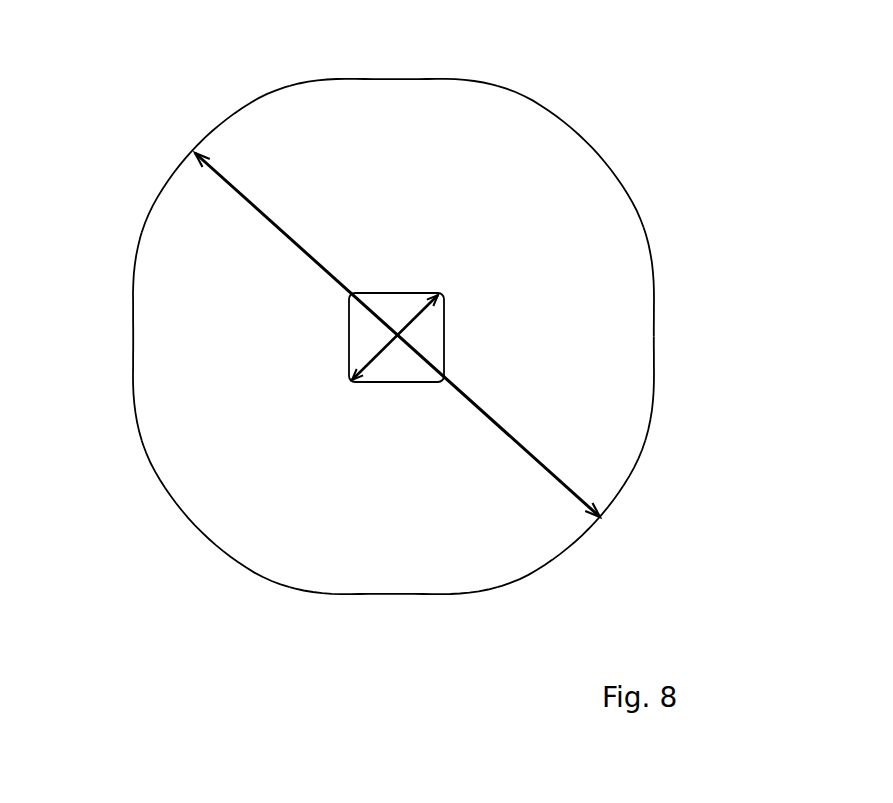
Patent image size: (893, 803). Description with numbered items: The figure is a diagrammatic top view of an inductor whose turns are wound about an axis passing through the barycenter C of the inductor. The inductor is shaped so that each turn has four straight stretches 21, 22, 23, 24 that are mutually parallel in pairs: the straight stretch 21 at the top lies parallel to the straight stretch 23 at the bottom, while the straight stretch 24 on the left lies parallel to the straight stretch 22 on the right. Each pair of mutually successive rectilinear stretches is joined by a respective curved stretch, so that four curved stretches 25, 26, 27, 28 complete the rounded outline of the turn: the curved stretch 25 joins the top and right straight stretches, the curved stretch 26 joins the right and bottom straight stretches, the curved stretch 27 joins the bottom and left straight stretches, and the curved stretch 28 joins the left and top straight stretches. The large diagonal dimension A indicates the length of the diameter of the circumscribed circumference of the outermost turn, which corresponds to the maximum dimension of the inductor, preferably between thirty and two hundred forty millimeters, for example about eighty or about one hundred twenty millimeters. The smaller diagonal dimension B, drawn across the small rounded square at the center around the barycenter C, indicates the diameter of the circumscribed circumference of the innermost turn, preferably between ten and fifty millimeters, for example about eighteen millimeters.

The straight stretch 21 is at (396, 79).
The straight stretch 22 is at (654, 338).
The straight stretch 23 is at (390, 594).
The straight stretch 24 is at (133, 330).
The curved stretch 25 is at (593, 147).
The curved stretch 26 is at (616, 496).
The curved stretch 27 is at (190, 524).
The curved stretch 28 is at (170, 178).
The diameter of the circumscribed circumference of the outermost turn A is at (224, 180).
The diameter of the circumscribed circumference of the innermost turn B is at (418, 320).
The barycenter C is at (395, 335).